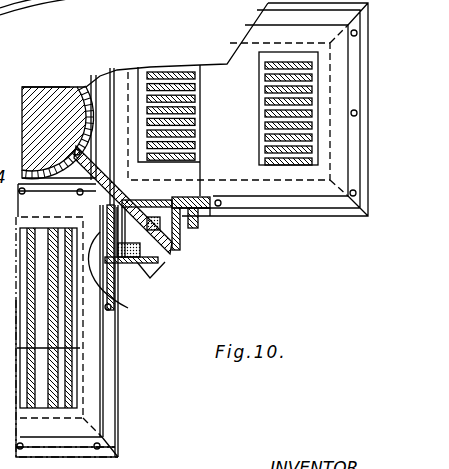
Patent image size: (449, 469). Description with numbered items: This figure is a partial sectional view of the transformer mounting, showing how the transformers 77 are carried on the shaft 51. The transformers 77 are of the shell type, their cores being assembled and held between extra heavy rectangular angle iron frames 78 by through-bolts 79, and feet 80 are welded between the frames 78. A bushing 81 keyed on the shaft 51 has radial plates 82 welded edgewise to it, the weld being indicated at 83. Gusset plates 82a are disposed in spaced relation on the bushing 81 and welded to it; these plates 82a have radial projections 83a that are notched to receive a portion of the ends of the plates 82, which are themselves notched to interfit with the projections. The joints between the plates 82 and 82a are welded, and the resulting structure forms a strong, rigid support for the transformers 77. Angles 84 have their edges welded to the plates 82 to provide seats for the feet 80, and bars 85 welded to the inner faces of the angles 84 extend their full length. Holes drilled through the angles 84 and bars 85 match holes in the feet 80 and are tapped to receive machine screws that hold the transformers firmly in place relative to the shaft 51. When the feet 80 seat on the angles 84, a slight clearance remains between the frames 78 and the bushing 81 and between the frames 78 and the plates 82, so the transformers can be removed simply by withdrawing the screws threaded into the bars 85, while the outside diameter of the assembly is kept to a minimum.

The shaft 51 is at (33, 93).
The transformers 77 is at (217, 75).
The angle iron frames 78 is at (121, 403).
The through-bolts 79 is at (117, 80).
The feet 80 is at (213, 197).
The bushing 81 is at (85, 80).
The radial plates 82 is at (160, 258).
The gusset plates 82a is at (150, 186).
The weld 83 is at (50, 200).
The radial projections 83a is at (182, 226).
The angles 84 is at (172, 246).
The bars 85 is at (160, 262).